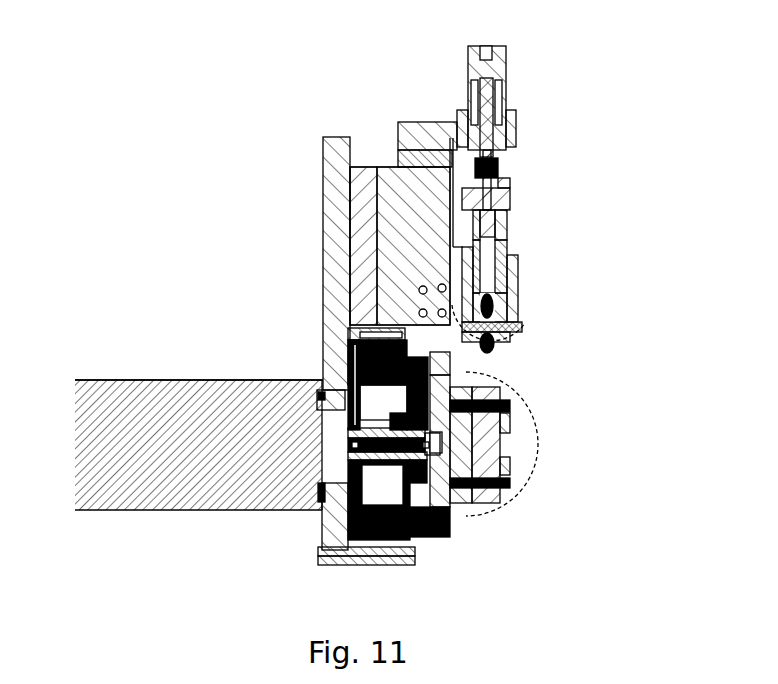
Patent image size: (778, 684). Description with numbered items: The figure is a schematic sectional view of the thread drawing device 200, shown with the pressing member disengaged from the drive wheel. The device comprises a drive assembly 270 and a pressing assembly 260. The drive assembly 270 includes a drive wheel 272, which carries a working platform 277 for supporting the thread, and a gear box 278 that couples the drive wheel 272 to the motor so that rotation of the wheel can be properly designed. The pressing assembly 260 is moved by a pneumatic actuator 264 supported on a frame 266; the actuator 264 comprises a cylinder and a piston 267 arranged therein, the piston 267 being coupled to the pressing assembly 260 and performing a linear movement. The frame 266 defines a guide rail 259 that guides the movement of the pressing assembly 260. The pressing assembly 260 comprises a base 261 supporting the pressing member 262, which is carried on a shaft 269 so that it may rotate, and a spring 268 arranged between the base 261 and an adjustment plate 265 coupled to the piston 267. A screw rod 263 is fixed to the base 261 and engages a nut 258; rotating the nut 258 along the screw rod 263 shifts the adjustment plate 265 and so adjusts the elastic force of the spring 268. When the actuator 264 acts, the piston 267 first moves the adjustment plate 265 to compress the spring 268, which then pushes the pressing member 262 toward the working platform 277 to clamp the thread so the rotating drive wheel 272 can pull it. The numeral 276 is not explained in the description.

The thread drawing device 200 is at (254, 229).
The nut 258 is at (452, 208).
The guide rail 259 is at (450, 278).
The pressing assembly 260 is at (537, 141).
The base 261 is at (517, 312).
The pressing member 262 is at (518, 283).
The screw rod 263 is at (505, 215).
The actuator 264 is at (438, 110).
The adjustment plate 265 is at (447, 212).
The frame 266 is at (407, 173).
The piston 267 is at (508, 135).
The spring 268 is at (498, 253).
The shaft 269 is at (522, 330).
The drive assembly 270 is at (535, 418).
The drive wheel 272 is at (503, 465).
The wall 276 is at (226, 495).
The working platform 277 is at (487, 502).
The gear box 278 is at (300, 527).